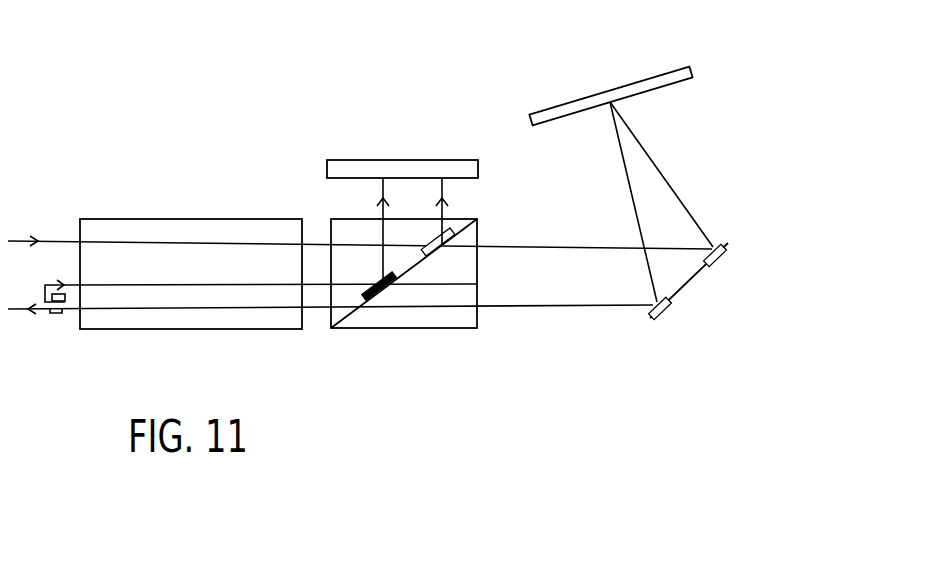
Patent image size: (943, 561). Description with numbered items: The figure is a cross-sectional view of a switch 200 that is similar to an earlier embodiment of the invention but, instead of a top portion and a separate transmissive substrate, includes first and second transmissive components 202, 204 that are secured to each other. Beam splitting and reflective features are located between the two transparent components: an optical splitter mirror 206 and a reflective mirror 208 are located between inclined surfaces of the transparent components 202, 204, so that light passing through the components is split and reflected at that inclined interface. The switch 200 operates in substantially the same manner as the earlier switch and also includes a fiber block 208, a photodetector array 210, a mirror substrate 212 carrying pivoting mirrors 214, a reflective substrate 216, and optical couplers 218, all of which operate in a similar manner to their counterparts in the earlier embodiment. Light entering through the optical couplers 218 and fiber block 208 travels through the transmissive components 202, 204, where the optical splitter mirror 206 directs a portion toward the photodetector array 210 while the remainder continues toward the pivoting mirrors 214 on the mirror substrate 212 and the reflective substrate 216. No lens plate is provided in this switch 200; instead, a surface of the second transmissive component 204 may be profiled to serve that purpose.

The switch 200 is at (150, 68).
The first transmissive component 202 is at (355, 232).
The second transmissive component 204 is at (462, 282).
The optical splitter mirror 206 is at (455, 226).
The reflective mirror / fiber block 208 is at (192, 232).
The photodetector array 210 is at (417, 160).
The mirror substrate 212 is at (700, 274).
The pivoting mirrors 214 is at (723, 240).
The reflective substrate 216 is at (643, 85).
The optical couplers 218 is at (60, 318).